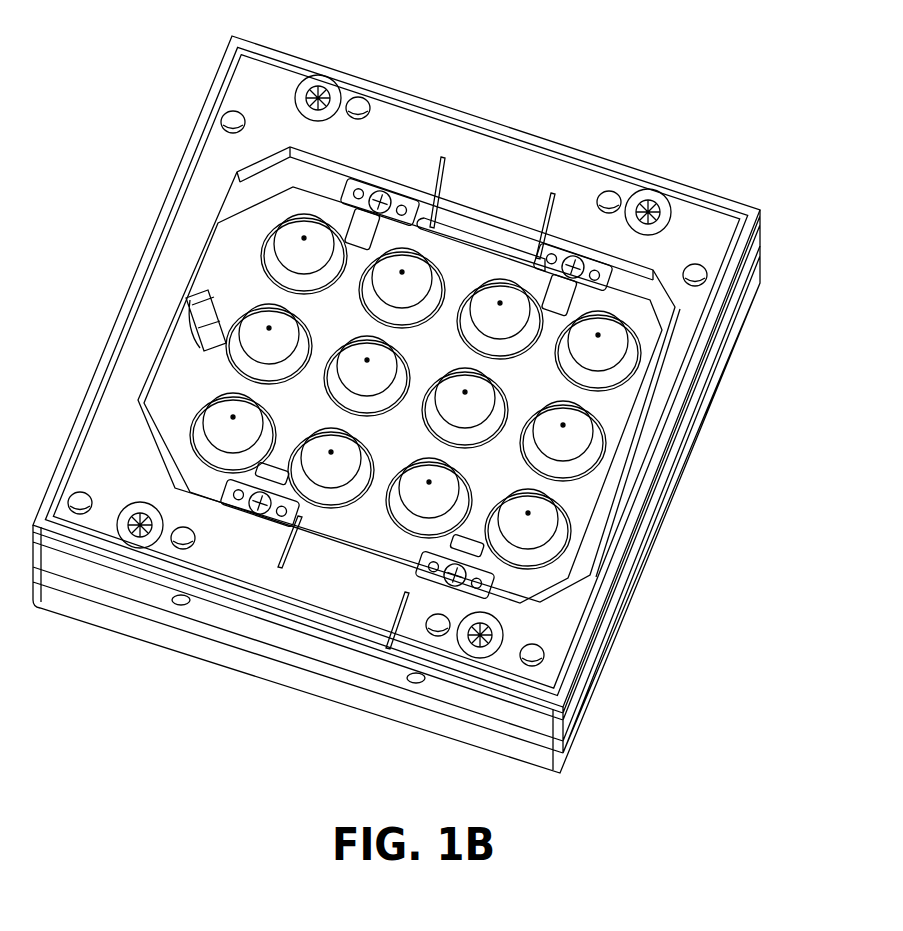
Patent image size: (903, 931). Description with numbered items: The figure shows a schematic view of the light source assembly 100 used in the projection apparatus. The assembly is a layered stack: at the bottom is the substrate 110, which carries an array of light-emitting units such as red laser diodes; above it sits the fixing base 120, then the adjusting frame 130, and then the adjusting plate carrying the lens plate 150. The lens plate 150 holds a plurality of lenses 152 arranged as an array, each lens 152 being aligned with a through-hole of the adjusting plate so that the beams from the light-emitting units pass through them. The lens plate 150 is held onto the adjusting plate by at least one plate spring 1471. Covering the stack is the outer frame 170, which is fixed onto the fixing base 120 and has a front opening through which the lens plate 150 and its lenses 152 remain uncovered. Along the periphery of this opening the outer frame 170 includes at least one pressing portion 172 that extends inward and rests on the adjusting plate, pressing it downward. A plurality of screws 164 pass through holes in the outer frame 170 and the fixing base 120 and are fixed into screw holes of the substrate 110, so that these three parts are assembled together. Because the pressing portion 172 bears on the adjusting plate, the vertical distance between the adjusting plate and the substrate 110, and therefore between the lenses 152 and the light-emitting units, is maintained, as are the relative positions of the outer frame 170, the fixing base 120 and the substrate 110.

The light source assembly 100 is at (765, 117).
The substrate 110 is at (597, 707).
The fixing base 120 is at (615, 600).
The adjusting frame 130 is at (260, 180).
The lens plate 150 is at (622, 415).
The lens 152 is at (613, 352).
The screw 164 is at (667, 203).
The outer frame 170 is at (638, 502).
The pressing portion 172 is at (447, 228).
The plate spring 1471 is at (573, 256).